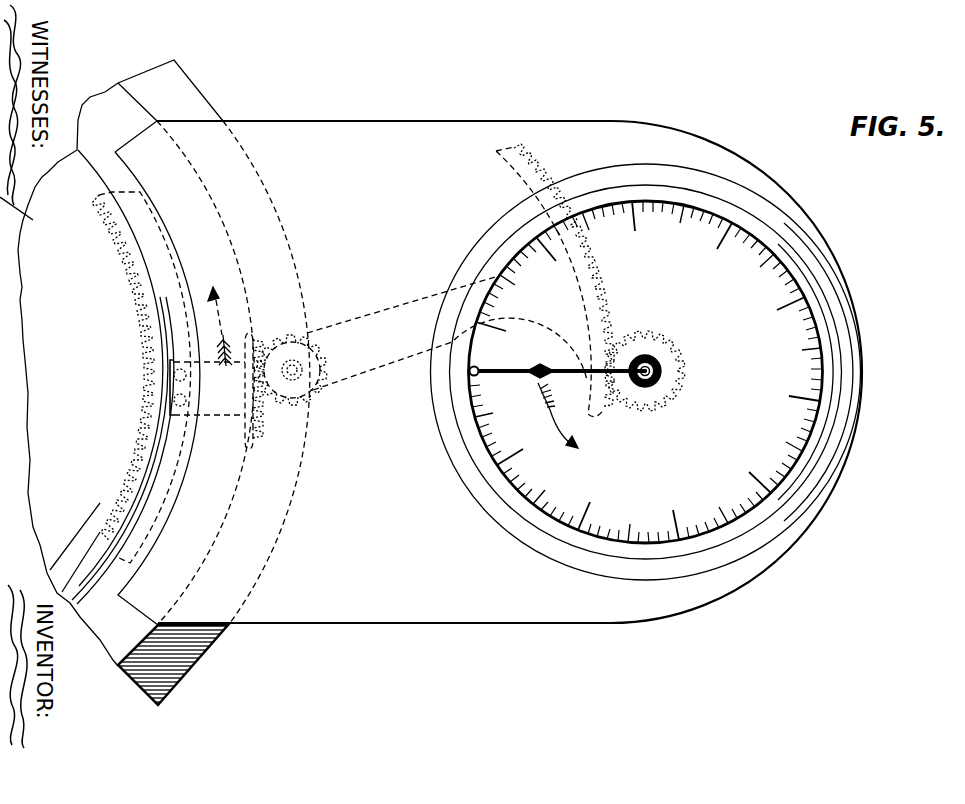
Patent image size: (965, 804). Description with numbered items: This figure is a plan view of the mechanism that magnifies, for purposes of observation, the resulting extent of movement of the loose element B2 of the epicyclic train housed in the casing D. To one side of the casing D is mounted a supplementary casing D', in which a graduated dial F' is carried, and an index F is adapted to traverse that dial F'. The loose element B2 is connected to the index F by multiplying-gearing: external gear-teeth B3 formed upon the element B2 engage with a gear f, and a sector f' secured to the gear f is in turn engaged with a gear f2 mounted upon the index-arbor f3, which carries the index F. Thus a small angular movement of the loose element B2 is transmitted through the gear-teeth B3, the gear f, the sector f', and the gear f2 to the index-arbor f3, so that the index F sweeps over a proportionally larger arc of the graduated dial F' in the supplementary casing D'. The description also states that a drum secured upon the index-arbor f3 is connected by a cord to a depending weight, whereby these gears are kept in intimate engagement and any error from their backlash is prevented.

The casing D is at (96, 374).
The supplementary casing D' is at (488, 382).
The loose element B2 is at (128, 283).
The external gear-teeth B3 is at (263, 404).
The gear f is at (298, 380).
The sector f' is at (565, 280).
The gear f2 is at (690, 373).
The index-arbor f3 is at (640, 388).
The index F is at (558, 357).
The graduated dial F' is at (646, 372).